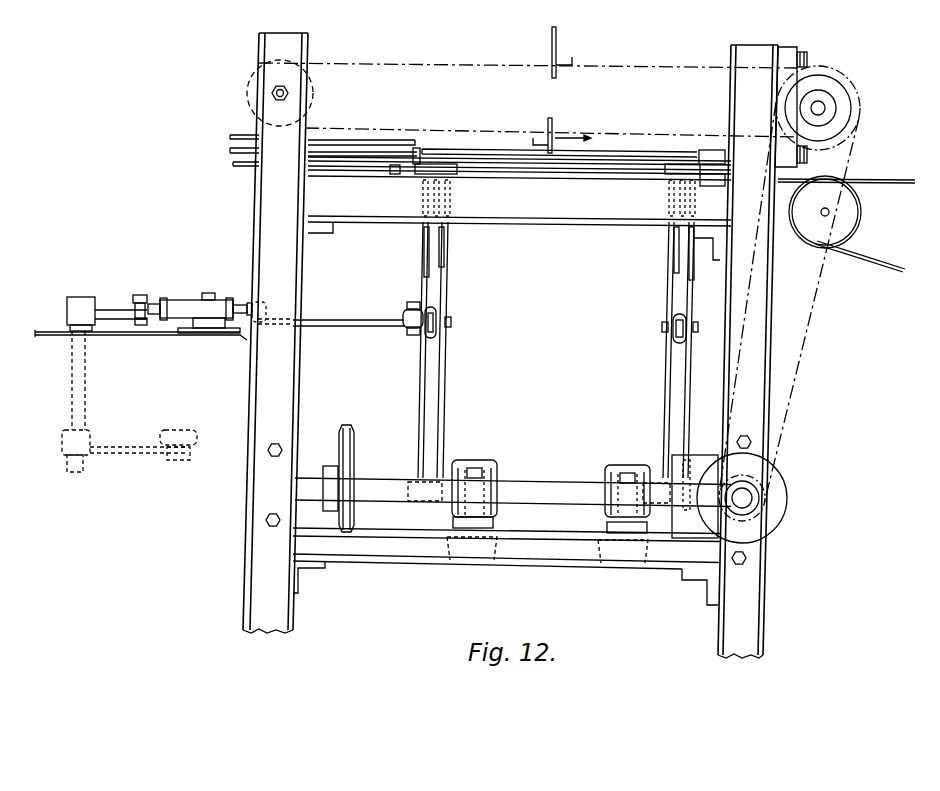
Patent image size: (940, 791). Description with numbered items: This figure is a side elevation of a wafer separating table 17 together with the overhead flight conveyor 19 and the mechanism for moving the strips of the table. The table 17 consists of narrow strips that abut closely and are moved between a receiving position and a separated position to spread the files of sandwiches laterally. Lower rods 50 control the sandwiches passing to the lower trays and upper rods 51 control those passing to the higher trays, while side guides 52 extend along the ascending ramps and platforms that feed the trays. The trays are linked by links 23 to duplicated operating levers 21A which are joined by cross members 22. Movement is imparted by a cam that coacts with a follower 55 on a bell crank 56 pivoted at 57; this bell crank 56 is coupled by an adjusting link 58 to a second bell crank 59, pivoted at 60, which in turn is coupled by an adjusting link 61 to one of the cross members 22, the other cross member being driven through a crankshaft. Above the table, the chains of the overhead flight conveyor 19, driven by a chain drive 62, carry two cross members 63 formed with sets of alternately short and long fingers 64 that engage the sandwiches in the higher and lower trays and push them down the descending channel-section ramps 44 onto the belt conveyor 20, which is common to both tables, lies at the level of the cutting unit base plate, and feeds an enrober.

The wafer separating table 17 is at (625, 153).
The overhead flight conveyor 19 is at (467, 65).
The belt conveyor 20 is at (880, 178).
The operating lever 21A is at (447, 353).
The cross member 22 is at (441, 320).
The link 23 is at (439, 248).
The descending channel-section ramp 44 is at (803, 166).
The lower rod 50 is at (233, 135).
The upper rod 51 is at (230, 150).
The side guide 52 is at (392, 140).
The follower 55 is at (190, 432).
The bell crank 56 is at (108, 313).
The pivot 57 is at (87, 394).
The adjusting link 58 is at (172, 300).
The second bell crank 59 is at (330, 319).
The pivot 60 is at (214, 295).
The adjusting link 61 is at (407, 309).
The chain drive 62 is at (811, 318).
The cross member 63 is at (572, 56).
The finger 64 is at (552, 30).